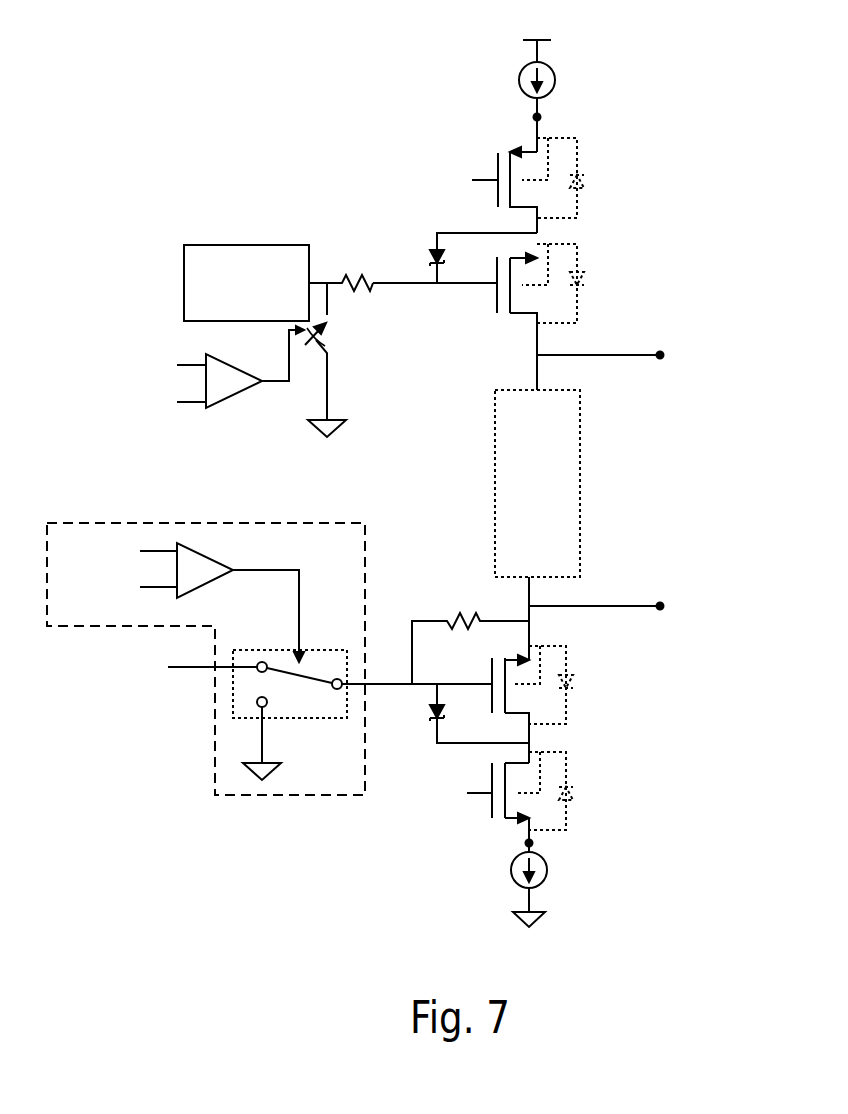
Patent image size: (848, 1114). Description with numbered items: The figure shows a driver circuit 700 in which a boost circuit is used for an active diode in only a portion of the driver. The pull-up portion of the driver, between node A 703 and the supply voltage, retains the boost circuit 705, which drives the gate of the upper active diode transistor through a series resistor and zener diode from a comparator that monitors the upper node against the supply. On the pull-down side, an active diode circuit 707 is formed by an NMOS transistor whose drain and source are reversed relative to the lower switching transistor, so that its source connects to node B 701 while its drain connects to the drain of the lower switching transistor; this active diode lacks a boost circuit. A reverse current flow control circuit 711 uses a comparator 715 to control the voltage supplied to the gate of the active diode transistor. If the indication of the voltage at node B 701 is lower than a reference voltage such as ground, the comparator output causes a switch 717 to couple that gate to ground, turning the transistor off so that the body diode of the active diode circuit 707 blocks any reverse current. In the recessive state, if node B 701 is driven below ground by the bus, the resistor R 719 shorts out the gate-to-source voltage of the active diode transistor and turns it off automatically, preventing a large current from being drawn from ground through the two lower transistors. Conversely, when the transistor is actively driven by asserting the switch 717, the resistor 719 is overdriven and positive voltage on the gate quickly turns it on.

The driver circuit 700 is at (303, 157).
The node B 701 is at (664, 611).
The node A 703 is at (653, 352).
The boost circuit 705 is at (184, 282).
The active diode circuit 707 is at (588, 697).
The reverse current flow control circuit 711 is at (248, 639).
The comparator 715 is at (198, 547).
The switch 717 is at (338, 652).
The resistor R 719 is at (451, 616).